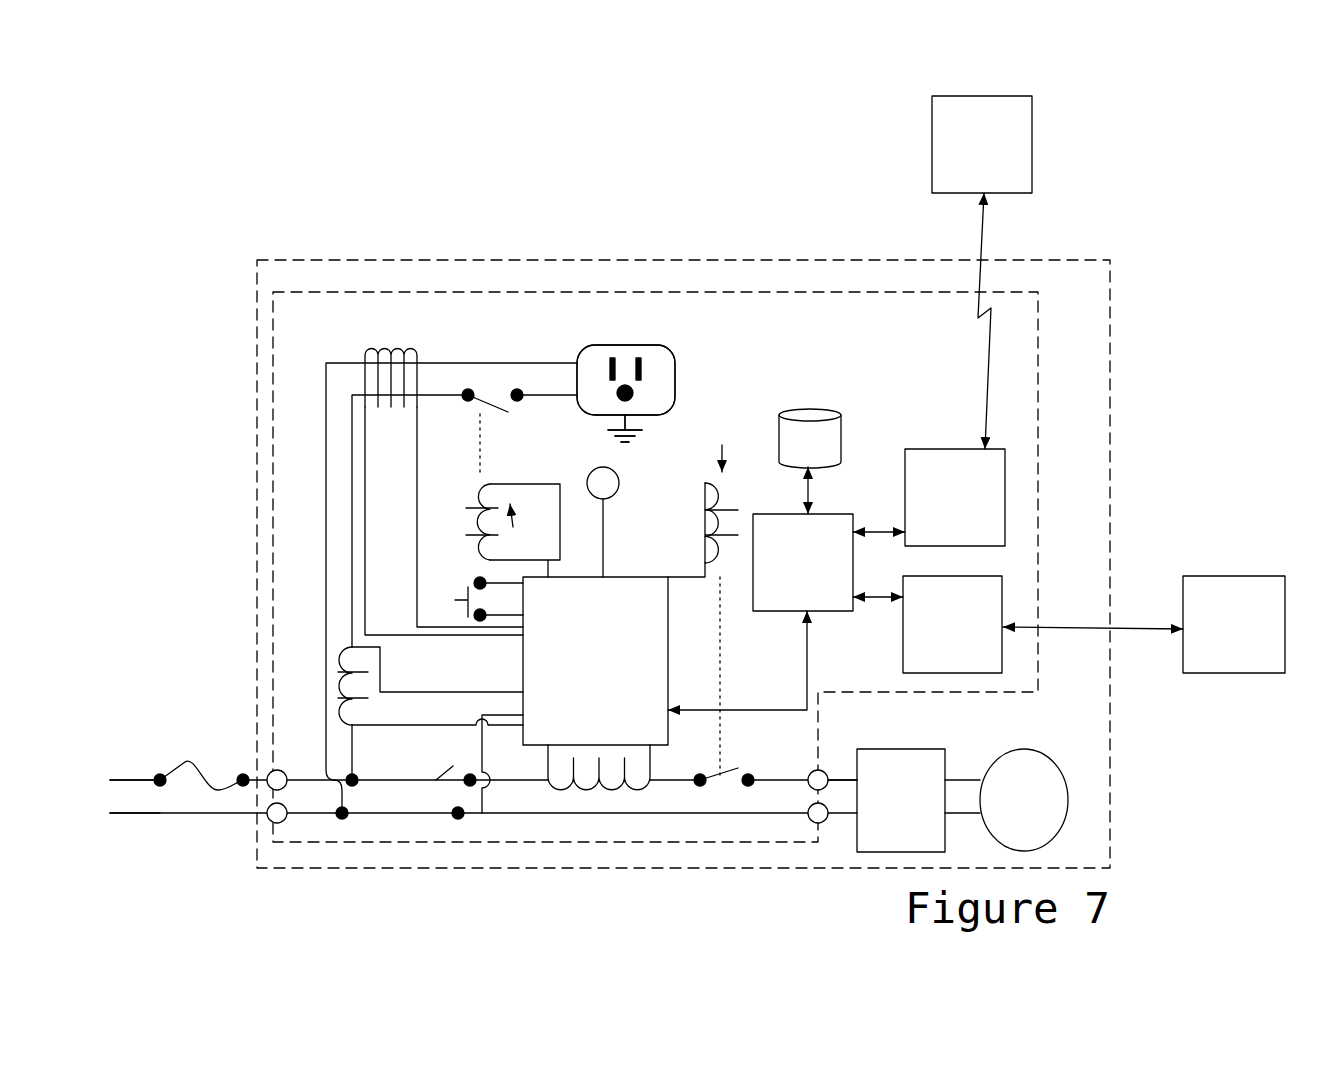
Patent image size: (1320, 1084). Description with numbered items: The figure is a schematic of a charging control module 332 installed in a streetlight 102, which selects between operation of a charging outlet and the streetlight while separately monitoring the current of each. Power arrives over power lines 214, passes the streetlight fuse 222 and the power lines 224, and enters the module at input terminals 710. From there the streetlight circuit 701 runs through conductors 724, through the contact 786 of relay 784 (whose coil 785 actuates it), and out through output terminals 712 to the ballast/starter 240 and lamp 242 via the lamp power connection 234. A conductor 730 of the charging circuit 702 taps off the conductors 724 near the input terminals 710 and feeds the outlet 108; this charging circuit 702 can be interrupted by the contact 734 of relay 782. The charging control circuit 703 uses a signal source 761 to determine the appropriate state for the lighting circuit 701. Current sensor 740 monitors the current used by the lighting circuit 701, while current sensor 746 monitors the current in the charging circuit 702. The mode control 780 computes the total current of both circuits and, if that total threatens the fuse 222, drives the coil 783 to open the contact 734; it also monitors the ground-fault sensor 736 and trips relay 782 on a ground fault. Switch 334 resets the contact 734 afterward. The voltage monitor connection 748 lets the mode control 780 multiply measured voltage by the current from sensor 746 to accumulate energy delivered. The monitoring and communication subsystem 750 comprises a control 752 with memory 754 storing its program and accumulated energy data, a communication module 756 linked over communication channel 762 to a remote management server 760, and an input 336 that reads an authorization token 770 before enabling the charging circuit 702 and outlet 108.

The streetlight 102 is at (286, 258).
The charging control module 332 is at (405, 292).
The ground-fault sensor 736 is at (366, 356).
The contact 734 is at (488, 403).
The outlet 108 is at (676, 392).
The charging circuit 702 is at (698, 361).
The charging control circuit 703 is at (666, 466).
The signal source 761 is at (589, 473).
The coil 783 is at (463, 490).
The relay 782 is at (525, 531).
The switch 334 is at (465, 590).
The mode control 780 is at (520, 677).
The current sensor 746 is at (338, 648).
The conductor 730 is at (355, 766).
The voltage monitor connection 748 is at (477, 762).
The conductors 724 is at (448, 771).
The current sensor 740 is at (548, 771).
The contact 786 is at (726, 773).
The relay coil 785 is at (736, 497).
The relay 784 is at (722, 447).
The control 752 is at (835, 513).
The monitoring and communication subsystem 750 is at (794, 651).
The memory 754 is at (806, 392).
The communication module 756 is at (951, 449).
The input 336 is at (951, 576).
The management server 760 is at (950, 80).
The communication channel 762 is at (979, 241).
The authorization token 770 is at (1201, 560).
The streetlight circuit 701 is at (963, 758).
The ballast/starter 240 is at (905, 749).
The lamp 242 is at (1020, 750).
The lamp power line 234 is at (843, 780).
The streetlight fuse 222 is at (185, 762).
The power lines 224 is at (246, 771).
The power lines 214 is at (128, 785).
The input terminals 710 is at (290, 806).
The output terminals 712 is at (806, 808).